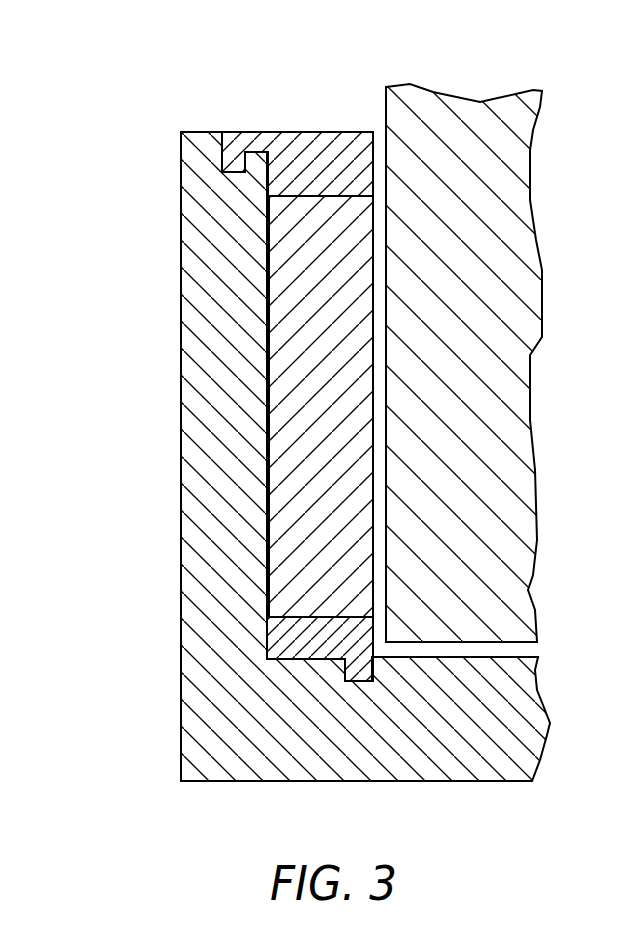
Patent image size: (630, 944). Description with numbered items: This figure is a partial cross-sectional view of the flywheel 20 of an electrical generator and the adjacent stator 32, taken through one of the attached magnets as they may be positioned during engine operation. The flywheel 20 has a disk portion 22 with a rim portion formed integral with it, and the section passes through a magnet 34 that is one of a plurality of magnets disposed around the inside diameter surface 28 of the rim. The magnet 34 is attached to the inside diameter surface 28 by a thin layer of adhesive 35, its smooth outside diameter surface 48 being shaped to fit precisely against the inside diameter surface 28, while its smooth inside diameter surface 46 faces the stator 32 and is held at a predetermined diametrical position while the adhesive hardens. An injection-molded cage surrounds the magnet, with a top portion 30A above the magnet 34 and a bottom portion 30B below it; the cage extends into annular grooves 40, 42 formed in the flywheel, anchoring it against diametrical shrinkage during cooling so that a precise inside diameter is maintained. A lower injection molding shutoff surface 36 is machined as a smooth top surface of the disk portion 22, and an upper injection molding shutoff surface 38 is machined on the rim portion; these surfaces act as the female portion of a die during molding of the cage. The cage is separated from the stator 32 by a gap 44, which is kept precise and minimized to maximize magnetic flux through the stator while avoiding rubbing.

The flywheel 20 is at (180, 653).
The disk portion 22 is at (436, 782).
The inside diameter surface 28 is at (266, 168).
The top portion of cage 30A is at (320, 140).
The bottom portion of cage 30B is at (277, 635).
The stator 32 is at (520, 515).
The magnet 34 is at (357, 302).
The adhesive 35 is at (266, 360).
The lower injection molding shutoff surface 36 is at (510, 657).
The upper injection molding shutoff surface 38 is at (202, 130).
The annular groove 40 is at (342, 673).
The annular groove 42 is at (223, 157).
The gap 44 is at (378, 140).
The inside diameter surface of magnet 46 is at (372, 418).
The outside diameter surface of magnet 48 is at (268, 552).